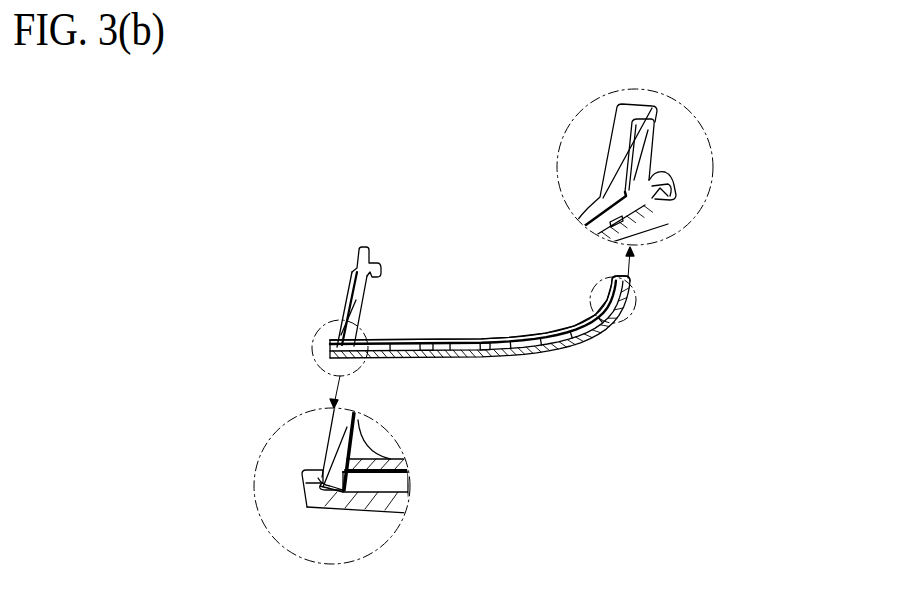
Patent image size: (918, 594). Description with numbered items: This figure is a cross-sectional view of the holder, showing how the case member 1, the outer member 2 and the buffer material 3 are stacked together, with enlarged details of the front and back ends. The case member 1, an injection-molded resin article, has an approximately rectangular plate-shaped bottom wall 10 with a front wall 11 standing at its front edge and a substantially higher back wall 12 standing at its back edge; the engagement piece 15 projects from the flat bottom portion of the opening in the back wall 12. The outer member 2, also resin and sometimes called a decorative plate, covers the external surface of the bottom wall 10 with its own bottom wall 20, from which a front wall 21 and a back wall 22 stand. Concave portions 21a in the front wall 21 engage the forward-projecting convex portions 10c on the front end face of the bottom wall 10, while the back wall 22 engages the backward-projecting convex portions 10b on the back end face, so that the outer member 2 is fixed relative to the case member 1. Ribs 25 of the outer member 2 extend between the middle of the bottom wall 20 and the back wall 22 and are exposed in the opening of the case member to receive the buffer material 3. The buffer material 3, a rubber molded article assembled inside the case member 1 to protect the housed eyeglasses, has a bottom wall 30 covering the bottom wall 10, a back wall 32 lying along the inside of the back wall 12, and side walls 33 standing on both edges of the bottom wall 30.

The case member 1 is at (520, 335).
The bottom wall 10 is at (480, 308).
The outer member 2 is at (518, 358).
The bottom wall 20 is at (647, 227).
The buffer material 3 is at (428, 338).
The bottom wall 30 is at (403, 462).
The ribs 25 is at (428, 358).
The engagement piece 15 is at (358, 248).
The back wall 12 is at (347, 295).
The side walls 33 is at (360, 298).
The back wall 32 is at (630, 105).
The front wall 11 is at (645, 153).
The convex portions 10c is at (667, 183).
The front wall 21 is at (670, 192).
The concave portions 21a is at (657, 197).
The convex portions 10b is at (300, 480).
The back wall 22 is at (305, 487).